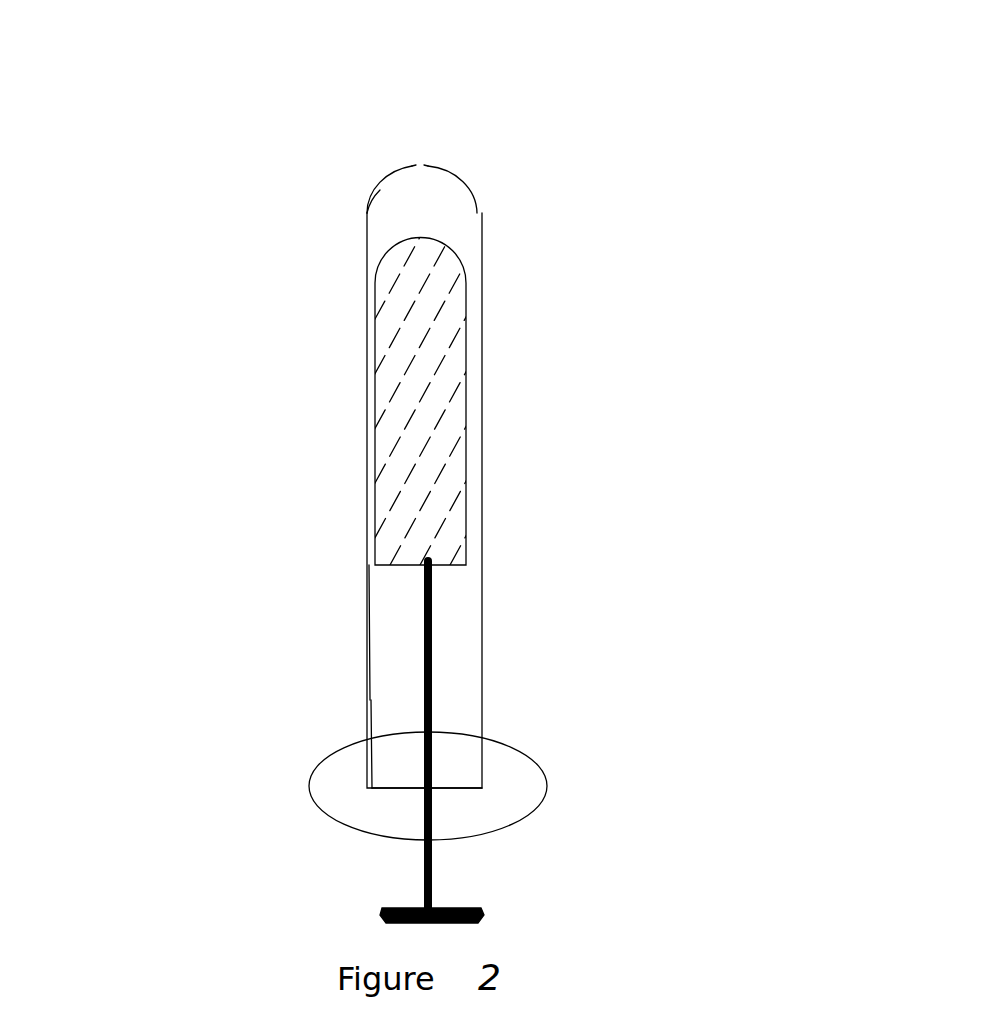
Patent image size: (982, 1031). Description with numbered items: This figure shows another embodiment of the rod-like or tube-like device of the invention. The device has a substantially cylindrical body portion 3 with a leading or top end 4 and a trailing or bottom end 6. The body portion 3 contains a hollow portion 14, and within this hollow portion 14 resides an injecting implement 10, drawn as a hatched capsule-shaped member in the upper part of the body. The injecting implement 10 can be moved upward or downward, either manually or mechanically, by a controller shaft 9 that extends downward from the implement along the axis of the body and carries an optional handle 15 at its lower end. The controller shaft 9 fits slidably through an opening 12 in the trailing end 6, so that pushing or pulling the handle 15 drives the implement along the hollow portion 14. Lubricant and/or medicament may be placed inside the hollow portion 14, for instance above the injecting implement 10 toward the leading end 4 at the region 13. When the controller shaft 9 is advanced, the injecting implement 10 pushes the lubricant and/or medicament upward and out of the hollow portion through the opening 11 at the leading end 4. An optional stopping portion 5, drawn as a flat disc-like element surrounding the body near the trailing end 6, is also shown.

The body portion 3 is at (480, 632).
The leading or top end 4 is at (475, 197).
The stopping portion 5 is at (547, 797).
The trailing or bottom end 6 is at (370, 775).
The controller shaft 9 is at (432, 716).
The injecting implement 10 is at (455, 340).
The opening 11 is at (423, 162).
The opening 12 is at (433, 790).
The region 13 is at (392, 208).
The hollow portion 14 is at (395, 605).
The handle 15 is at (375, 913).